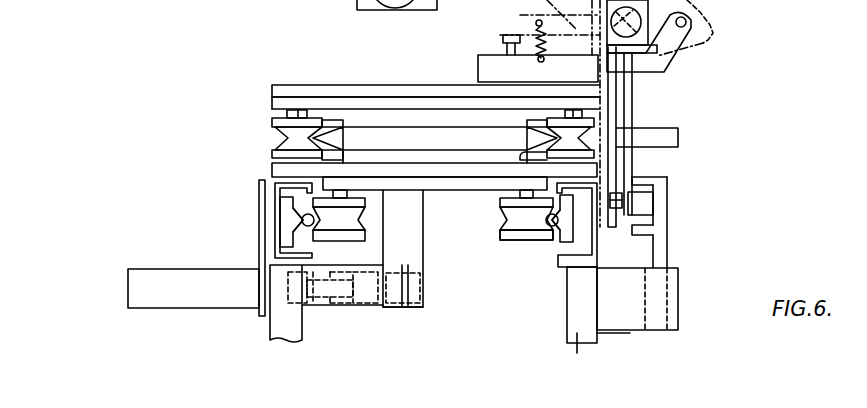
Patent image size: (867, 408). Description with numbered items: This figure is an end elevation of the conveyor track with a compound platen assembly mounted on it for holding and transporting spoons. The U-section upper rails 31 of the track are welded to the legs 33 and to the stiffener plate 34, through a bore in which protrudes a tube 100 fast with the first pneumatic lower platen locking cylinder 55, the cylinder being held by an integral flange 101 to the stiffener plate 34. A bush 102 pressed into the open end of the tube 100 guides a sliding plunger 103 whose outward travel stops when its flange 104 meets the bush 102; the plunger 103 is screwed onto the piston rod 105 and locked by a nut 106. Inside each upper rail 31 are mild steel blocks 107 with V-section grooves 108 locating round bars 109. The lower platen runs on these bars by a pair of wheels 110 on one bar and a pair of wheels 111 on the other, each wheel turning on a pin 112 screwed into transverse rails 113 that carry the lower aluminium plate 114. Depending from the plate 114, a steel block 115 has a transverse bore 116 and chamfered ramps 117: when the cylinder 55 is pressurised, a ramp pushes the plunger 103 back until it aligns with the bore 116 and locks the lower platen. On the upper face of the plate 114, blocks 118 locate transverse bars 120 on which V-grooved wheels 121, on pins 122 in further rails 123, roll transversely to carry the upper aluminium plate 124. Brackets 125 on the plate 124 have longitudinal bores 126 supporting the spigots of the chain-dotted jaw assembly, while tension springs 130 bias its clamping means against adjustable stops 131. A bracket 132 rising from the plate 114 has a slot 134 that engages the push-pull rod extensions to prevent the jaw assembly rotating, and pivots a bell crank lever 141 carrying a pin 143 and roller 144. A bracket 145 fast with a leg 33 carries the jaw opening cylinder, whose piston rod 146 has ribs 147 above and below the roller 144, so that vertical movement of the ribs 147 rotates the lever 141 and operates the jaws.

The upper rails 31 is at (275, 228).
The legs 33 is at (258, 326).
The stiffener plate 34 is at (259, 242).
The first pneumatic lower platen locking cylinder 55 is at (147, 300).
The tube 100 is at (330, 303).
The flange 101 is at (258, 292).
The bush 102 is at (377, 307).
The plunger 103 is at (340, 290).
The flange 104 is at (357, 297).
The piston rod 105 is at (293, 292).
The nut 106 is at (315, 310).
The blocks 107 is at (300, 240).
The V-section groove 108 is at (300, 219).
The bars 109 is at (304, 222).
The wheels 110 is at (338, 233).
The wheels 111 is at (507, 235).
The pin 112 is at (340, 195).
The rails 113 is at (328, 187).
The aluminium plate 114 is at (293, 170).
The steel block 115 is at (420, 285).
The transverse bore 116 is at (425, 308).
The ramps 117 is at (402, 308).
The blocks 118 is at (332, 122).
The bars 120 is at (678, 135).
The wheels 121 is at (293, 132).
The pins 122 is at (295, 115).
The rails 123 is at (297, 100).
The aluminium plate 124 is at (433, 90).
The brackets 125 is at (663, 60).
The longitudinal bores 126 is at (688, 20).
The tension springs 130 is at (530, 33).
The adjustable stops 131 is at (503, 40).
The bracket 132 is at (603, 85).
The slots 134 is at (700, 43).
The bell crank lever 141 is at (627, 162).
The pin 143 is at (618, 204).
The roller 144 is at (643, 213).
The bracket 145 is at (678, 290).
The piston rod 146 is at (660, 258).
The ribs 147 is at (637, 180).